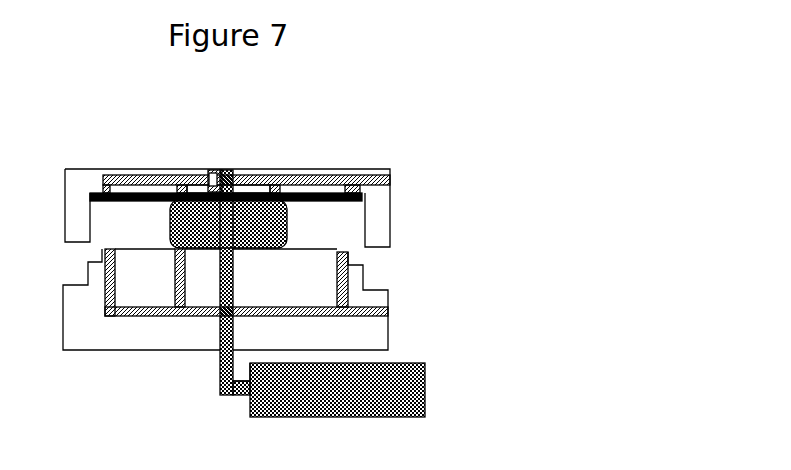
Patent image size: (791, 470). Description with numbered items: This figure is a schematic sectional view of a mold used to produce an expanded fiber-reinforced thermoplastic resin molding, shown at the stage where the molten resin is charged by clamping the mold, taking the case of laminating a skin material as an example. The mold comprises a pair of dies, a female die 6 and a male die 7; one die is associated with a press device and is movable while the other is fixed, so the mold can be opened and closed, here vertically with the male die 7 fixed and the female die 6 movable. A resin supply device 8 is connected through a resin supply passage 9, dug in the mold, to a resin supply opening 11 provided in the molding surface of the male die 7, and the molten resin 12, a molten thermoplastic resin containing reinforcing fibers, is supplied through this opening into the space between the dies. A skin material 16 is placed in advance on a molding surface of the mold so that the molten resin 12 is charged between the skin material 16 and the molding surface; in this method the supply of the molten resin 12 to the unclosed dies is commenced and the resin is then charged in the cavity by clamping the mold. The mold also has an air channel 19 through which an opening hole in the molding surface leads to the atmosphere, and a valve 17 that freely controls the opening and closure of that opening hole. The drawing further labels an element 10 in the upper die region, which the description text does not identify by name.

The female die 6 is at (378, 240).
The male die 7 is at (368, 342).
The resin supply device 8 is at (425, 377).
The resin supply passage 9 is at (232, 364).
The upper plate 10 is at (350, 187).
The resin supply opening 11 is at (287, 195).
The molten resin 12 is at (288, 226).
The skin material 16 is at (255, 193).
The valve 17 is at (232, 171).
The air channel 19 is at (207, 172).